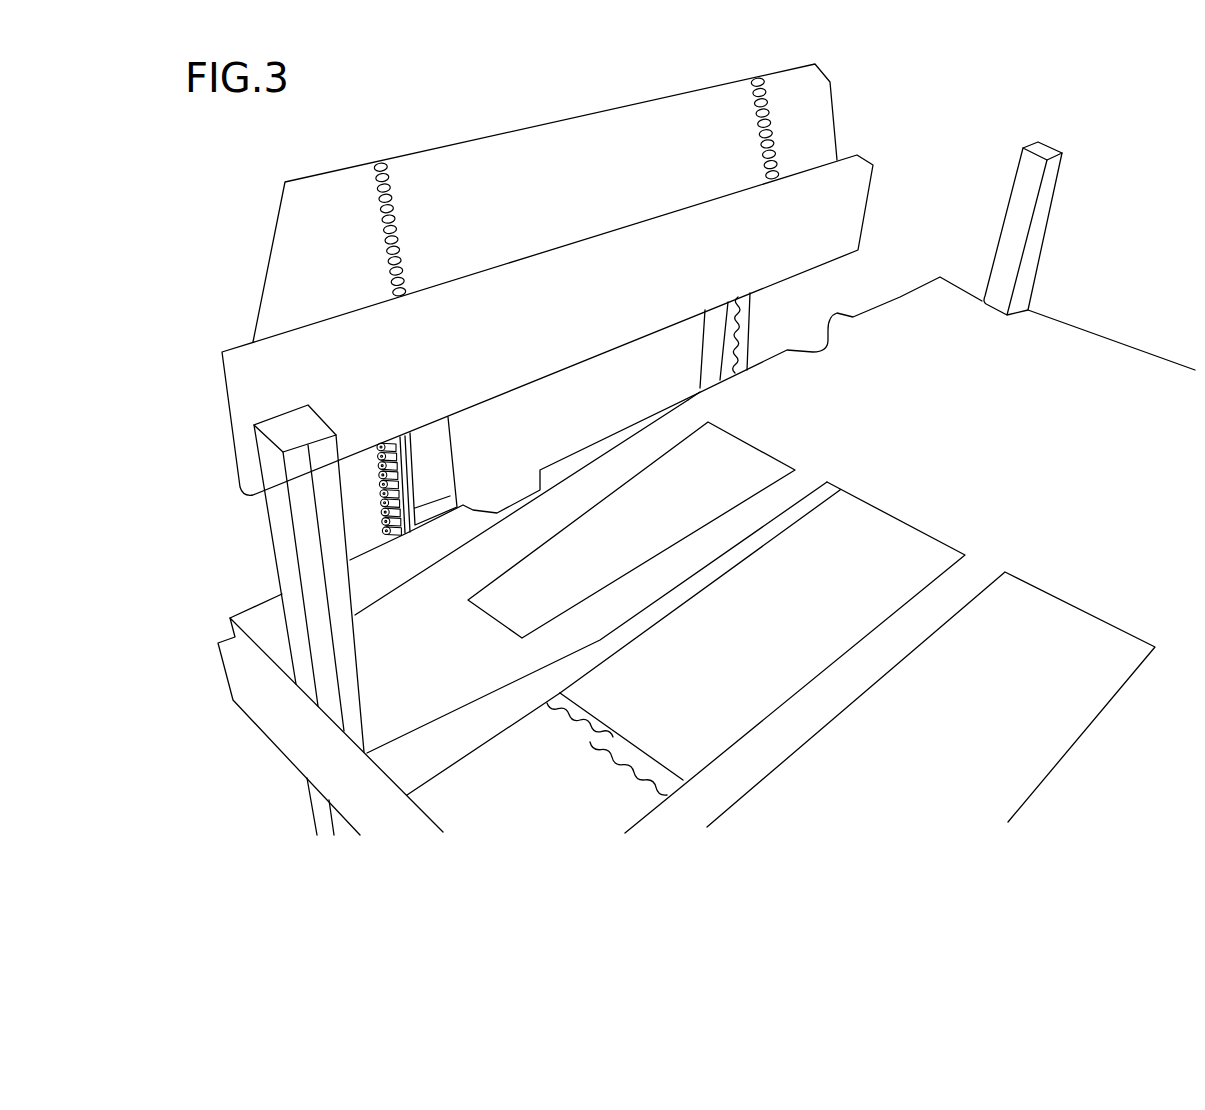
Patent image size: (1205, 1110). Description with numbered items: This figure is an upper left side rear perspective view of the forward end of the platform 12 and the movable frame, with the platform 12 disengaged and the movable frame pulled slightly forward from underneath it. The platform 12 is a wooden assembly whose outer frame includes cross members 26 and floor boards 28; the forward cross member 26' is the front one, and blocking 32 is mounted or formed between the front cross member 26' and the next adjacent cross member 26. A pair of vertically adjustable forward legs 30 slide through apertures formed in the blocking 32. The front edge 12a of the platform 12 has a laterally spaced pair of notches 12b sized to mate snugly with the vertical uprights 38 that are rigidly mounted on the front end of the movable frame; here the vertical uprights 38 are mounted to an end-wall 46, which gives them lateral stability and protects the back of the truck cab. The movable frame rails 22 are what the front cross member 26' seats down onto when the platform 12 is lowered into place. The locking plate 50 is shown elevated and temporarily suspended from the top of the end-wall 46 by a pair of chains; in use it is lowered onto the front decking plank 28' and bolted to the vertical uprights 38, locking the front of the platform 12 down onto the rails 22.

The platform 12 is at (1086, 352).
The front edge 12a is at (459, 509).
The notches 12b is at (838, 352).
The movable frame rails 22 is at (580, 744).
The cross members 26 is at (857, 657).
The front cross member 26' is at (631, 530).
The floor boards 28 is at (801, 424).
The front decking plank 28' is at (597, 616).
The forward legs 30 is at (287, 551).
The blocking 32 is at (330, 726).
The vertical uprights 38 is at (445, 455).
The end-wall 46 is at (743, 78).
The locking plate 50 is at (596, 309).